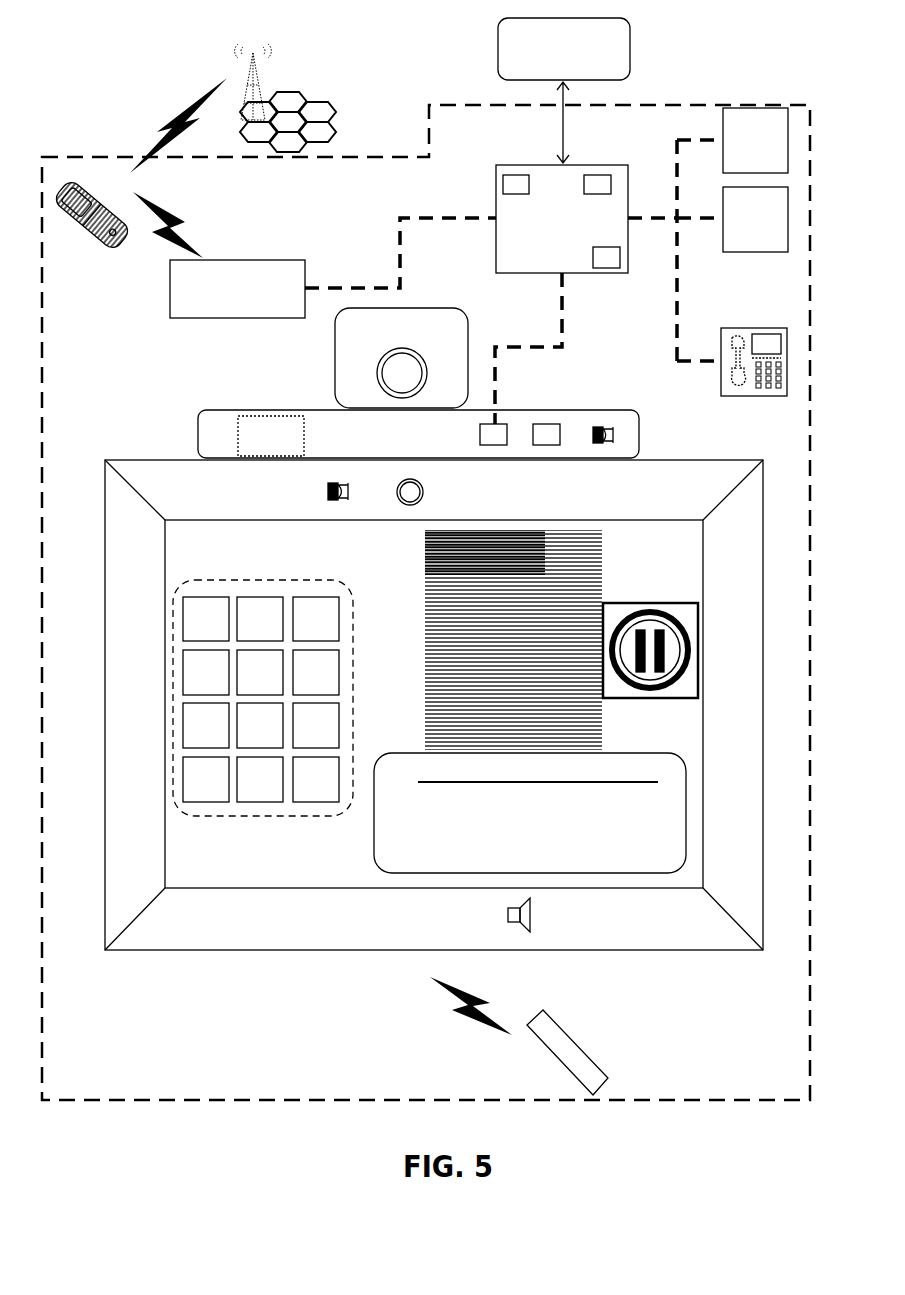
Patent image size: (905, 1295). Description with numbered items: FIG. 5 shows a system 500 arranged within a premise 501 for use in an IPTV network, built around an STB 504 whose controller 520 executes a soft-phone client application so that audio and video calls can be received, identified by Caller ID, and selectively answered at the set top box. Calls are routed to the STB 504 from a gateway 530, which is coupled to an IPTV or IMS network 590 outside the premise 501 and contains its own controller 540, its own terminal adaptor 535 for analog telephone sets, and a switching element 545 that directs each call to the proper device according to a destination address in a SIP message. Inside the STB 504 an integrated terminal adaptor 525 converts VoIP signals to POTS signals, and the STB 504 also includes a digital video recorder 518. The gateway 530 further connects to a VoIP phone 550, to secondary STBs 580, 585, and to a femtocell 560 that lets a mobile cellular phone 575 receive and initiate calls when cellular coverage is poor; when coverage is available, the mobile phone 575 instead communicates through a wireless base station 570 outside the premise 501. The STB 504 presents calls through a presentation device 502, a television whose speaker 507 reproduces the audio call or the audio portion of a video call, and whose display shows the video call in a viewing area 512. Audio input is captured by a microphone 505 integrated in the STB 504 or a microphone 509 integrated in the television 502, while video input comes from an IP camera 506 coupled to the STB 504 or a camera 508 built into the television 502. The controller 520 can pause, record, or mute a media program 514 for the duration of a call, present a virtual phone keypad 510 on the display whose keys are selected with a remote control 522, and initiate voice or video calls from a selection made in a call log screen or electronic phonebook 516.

The system 500 is at (473, 1141).
The premise 501 is at (652, 103).
The presentation device 502 is at (222, 924).
The STB 504 is at (197, 412).
The microphone 505 is at (597, 425).
The IP camera 506 is at (348, 341).
The speaker 507 is at (533, 914).
The camera 508 is at (424, 492).
The microphone 509 is at (325, 490).
The virtual phone keypad 510 is at (352, 608).
The viewing area 512 is at (600, 582).
The media program 514 is at (680, 610).
The electronic phonebook 516 is at (680, 755).
The digital video recorder 518 is at (252, 448).
The controller 520 is at (560, 436).
The remote control 522 is at (577, 1045).
The terminal adaptor 525 is at (507, 436).
The gateway 530 is at (543, 258).
The terminal adaptor 535 is at (611, 183).
The controller 540 is at (529, 187).
The switching element 545 is at (620, 268).
The VoIP phone 550 is at (767, 328).
The femtocell 560 is at (218, 313).
The wireless base station 570 is at (297, 92).
The mobile cellular phone 575 is at (75, 245).
The secondary STB 580 is at (736, 243).
The secondary STB 585 is at (736, 164).
The IMS network 590 is at (498, 52).